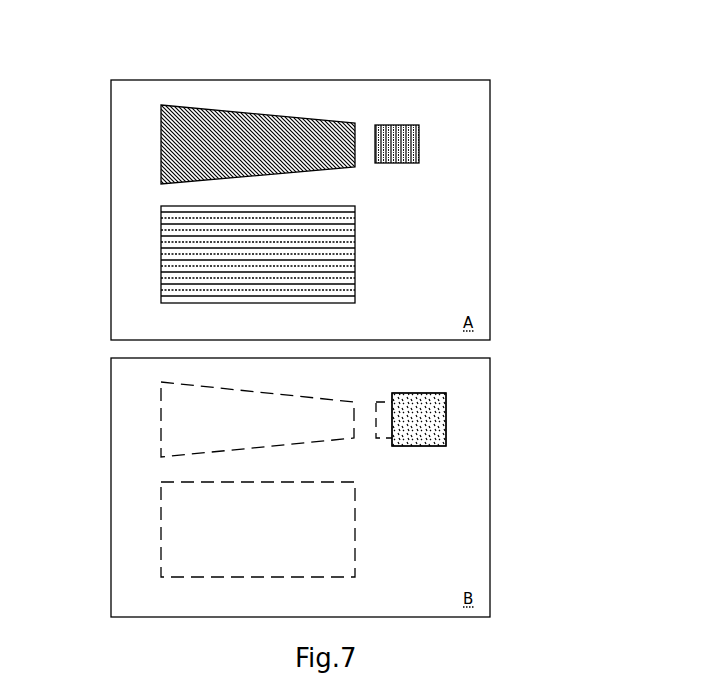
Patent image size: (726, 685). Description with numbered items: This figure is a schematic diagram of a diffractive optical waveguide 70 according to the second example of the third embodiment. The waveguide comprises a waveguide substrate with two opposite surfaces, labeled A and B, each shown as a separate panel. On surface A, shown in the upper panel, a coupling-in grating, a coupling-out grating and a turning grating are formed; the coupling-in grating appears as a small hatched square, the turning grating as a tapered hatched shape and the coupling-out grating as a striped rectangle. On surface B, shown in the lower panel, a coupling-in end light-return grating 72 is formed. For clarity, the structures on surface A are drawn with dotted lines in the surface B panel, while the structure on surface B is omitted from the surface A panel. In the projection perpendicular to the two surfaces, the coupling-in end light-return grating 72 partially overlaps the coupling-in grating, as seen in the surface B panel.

The diffractive optical waveguide 70 is at (345, 183).
The coupling-in end light-return grating 72 is at (446, 418).